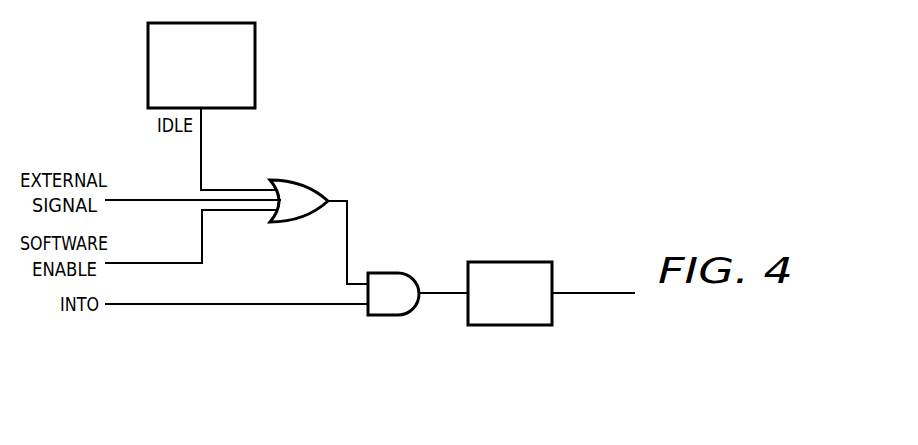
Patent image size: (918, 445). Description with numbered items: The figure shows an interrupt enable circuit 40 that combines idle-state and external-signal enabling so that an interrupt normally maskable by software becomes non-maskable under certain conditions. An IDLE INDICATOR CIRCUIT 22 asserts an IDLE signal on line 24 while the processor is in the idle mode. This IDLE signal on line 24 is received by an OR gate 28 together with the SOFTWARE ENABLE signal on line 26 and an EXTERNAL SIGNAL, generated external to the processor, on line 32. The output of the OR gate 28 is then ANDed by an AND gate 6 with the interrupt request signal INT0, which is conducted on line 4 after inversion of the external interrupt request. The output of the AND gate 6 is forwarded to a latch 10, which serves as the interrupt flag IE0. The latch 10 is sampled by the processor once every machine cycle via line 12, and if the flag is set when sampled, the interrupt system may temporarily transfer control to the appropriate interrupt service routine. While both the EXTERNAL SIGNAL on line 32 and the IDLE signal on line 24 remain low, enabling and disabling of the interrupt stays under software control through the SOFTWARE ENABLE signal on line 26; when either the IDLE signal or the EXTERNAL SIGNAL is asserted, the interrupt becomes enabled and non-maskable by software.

The IDLE INDICATOR CIRCUIT 22 is at (148, 66).
The line 24 is at (252, 188).
The line 32 is at (139, 198).
The line 26 is at (252, 212).
The OR gate 28 is at (283, 180).
The interrupt enable circuit 40 is at (447, 225).
The line 4 is at (188, 307).
The AND gate 6 is at (388, 270).
The latch 10 is at (509, 262).
The line 12 is at (594, 291).